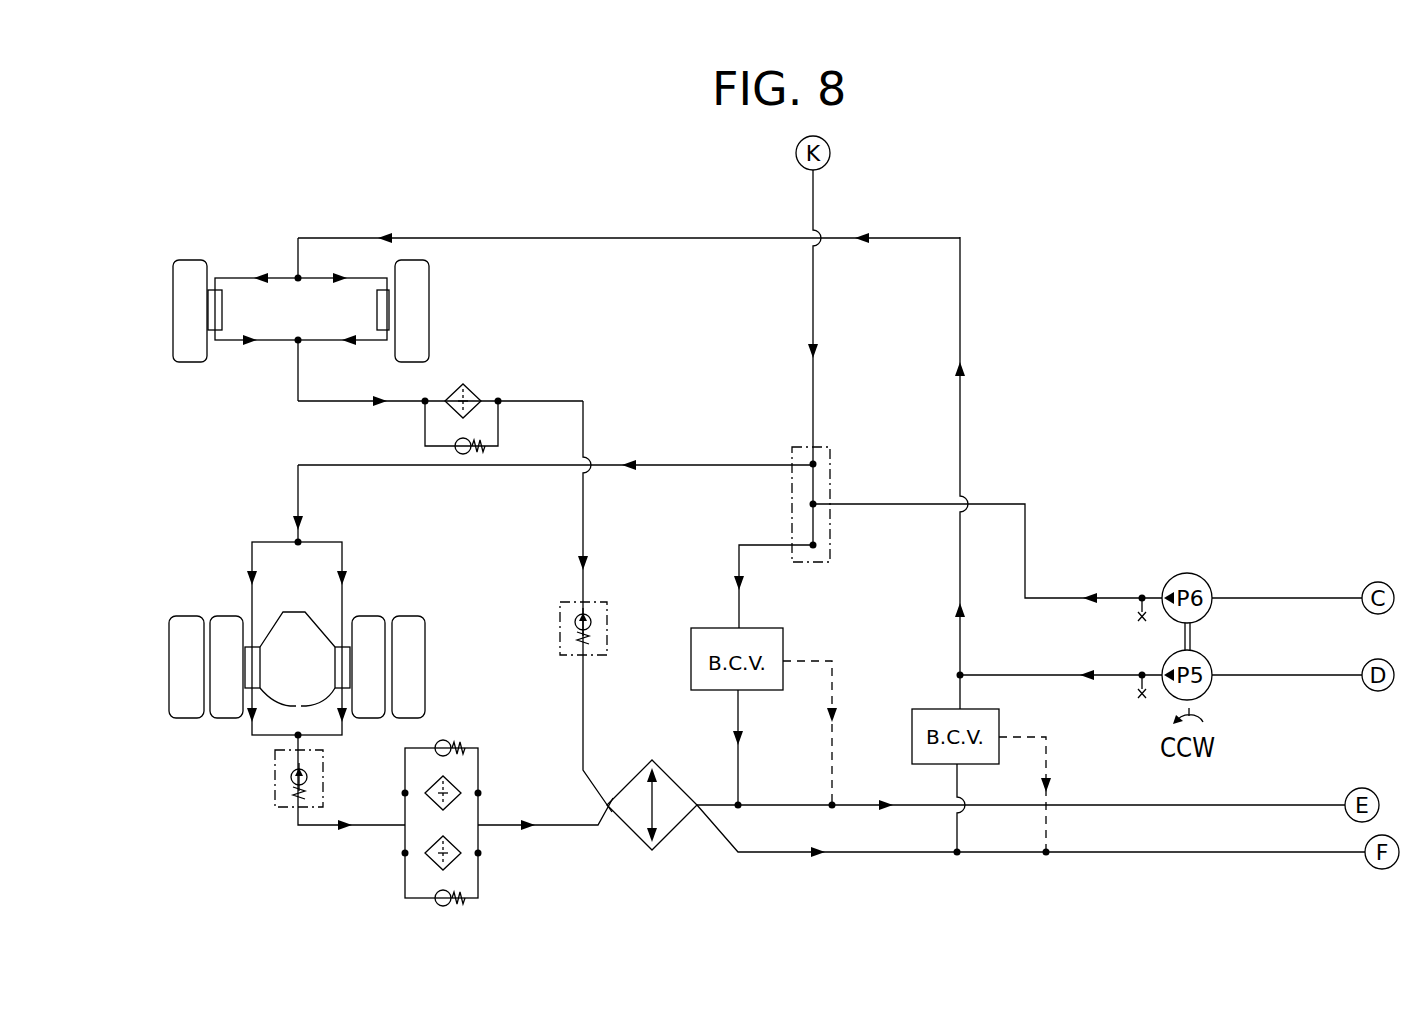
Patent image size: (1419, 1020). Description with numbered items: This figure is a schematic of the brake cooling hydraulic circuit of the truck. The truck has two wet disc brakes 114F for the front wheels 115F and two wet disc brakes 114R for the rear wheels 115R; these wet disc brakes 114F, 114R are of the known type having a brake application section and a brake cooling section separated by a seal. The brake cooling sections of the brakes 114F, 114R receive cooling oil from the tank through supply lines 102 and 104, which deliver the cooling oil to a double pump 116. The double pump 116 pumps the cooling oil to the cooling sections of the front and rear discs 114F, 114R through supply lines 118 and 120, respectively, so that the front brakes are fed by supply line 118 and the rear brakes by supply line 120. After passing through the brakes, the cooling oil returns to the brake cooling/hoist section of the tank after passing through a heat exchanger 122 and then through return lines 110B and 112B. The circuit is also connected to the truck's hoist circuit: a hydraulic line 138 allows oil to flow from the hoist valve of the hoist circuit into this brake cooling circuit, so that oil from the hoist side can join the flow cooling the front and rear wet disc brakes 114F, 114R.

The supply line 102 is at (1275, 598).
The supply line 104 is at (1275, 677).
The return line 110B is at (1258, 805).
The return line 112B is at (1255, 852).
The wet disc brakes 114F is at (226, 285).
The wet disc brakes 114R is at (333, 645).
The front wheels 115F is at (190, 278).
The rear wheels 115R is at (220, 628).
The double pump 116 is at (1183, 578).
The supply line 118 is at (962, 325).
The supply line 120 is at (677, 465).
The heat exchanger 122 is at (620, 825).
The hydraulic line 138 is at (815, 206).